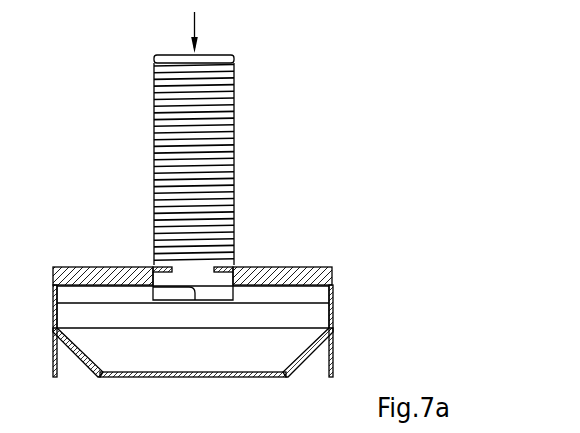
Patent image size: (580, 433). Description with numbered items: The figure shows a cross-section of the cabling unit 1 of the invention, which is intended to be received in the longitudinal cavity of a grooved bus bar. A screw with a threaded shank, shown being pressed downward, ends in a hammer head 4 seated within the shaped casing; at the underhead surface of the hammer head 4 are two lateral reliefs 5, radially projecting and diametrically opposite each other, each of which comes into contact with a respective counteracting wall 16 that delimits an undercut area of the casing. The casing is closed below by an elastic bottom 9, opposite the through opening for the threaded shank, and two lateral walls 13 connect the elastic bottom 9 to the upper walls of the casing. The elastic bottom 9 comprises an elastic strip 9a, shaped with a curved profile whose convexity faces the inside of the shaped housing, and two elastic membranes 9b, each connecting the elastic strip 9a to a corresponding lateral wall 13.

The cabling unit 1 is at (312, 233).
The hammer head 4 is at (266, 338).
The lateral reliefs 5 is at (172, 292).
The elastic bottom 9 is at (158, 386).
The elastic strip 9a is at (196, 379).
The elastic membranes 9b is at (82, 360).
The lateral walls 13 is at (54, 343).
The counteracting wall 16 is at (151, 275).